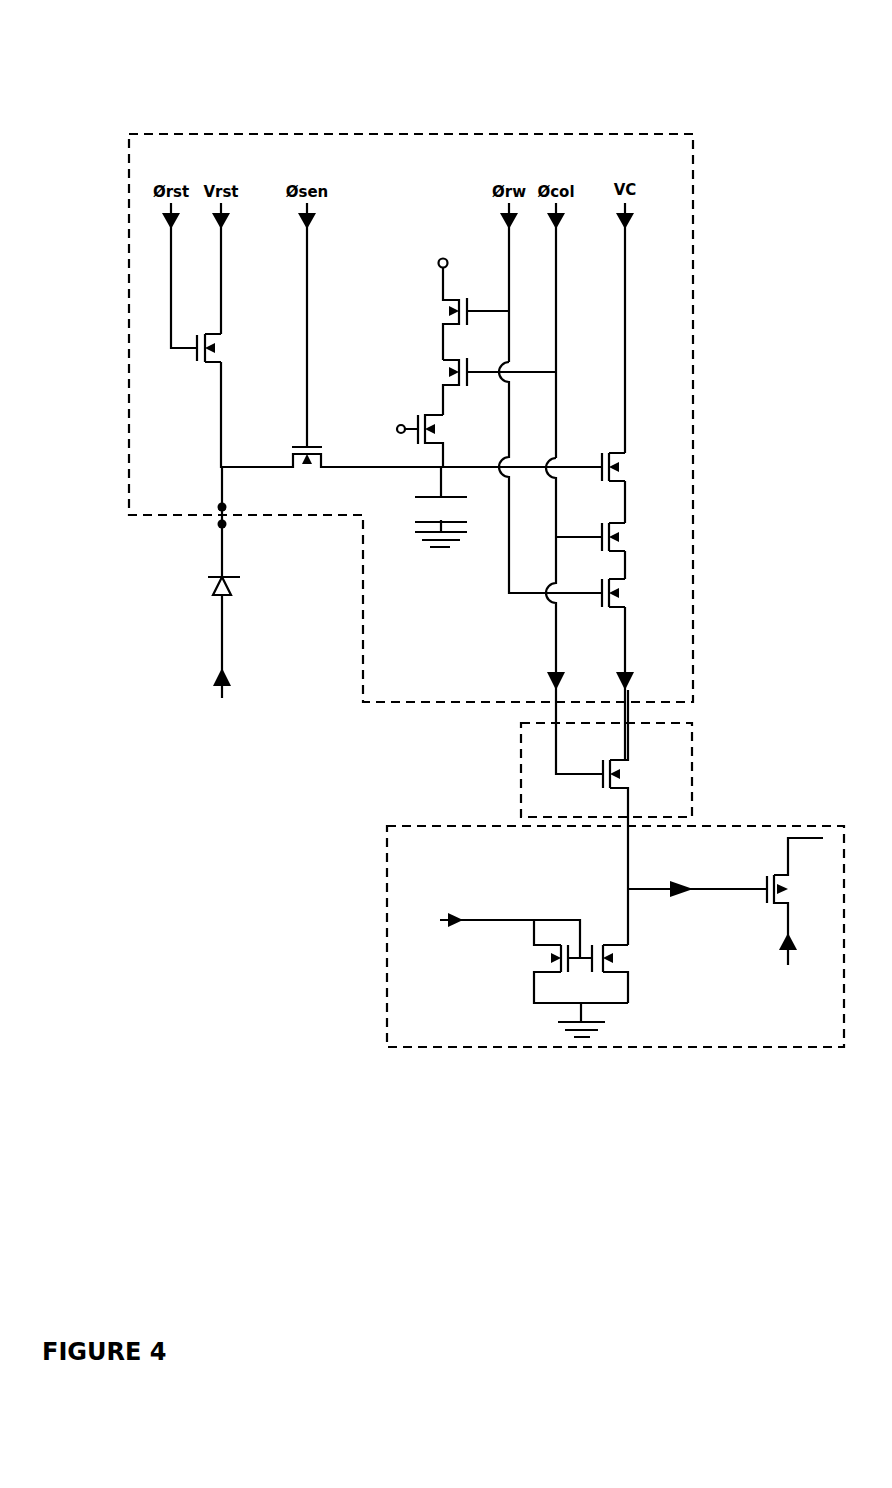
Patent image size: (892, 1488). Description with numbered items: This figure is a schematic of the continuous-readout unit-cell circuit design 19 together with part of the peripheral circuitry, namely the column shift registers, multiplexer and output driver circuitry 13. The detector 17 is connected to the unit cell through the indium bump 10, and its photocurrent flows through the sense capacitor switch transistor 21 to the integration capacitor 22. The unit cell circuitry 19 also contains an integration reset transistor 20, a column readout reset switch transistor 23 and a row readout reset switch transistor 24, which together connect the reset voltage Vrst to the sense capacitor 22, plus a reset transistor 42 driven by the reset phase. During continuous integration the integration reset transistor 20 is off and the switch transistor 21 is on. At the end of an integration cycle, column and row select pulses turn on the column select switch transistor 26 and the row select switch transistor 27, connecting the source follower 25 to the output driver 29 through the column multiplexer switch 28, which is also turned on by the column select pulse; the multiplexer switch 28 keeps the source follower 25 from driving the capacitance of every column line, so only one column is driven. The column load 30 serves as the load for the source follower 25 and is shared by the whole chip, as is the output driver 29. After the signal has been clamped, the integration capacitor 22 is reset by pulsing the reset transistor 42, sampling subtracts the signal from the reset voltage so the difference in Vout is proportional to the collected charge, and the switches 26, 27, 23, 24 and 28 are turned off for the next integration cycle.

The readout unit cell circuitry 19 is at (528, 124).
The indium bump 10 is at (217, 528).
The detector 17 is at (248, 589).
The integration reset transistor 20 is at (225, 348).
The sense capacitor switch transistor 21 is at (307, 474).
The integration capacitor 22 is at (423, 507).
The column readout reset switch transistor 23 is at (480, 386).
The row readout reset switch transistor 24 is at (460, 299).
The reset transistor 42 is at (413, 441).
The source follower 25 is at (632, 466).
The column select switch transistor 26 is at (608, 537).
The row select switch transistor 27 is at (632, 593).
The column multiplexer switch 28 is at (606, 817).
The column shift registers, multiplexer and output driver circuitry 13 is at (370, 922).
The output driver 29 is at (725, 916).
The column load 30 is at (511, 974).